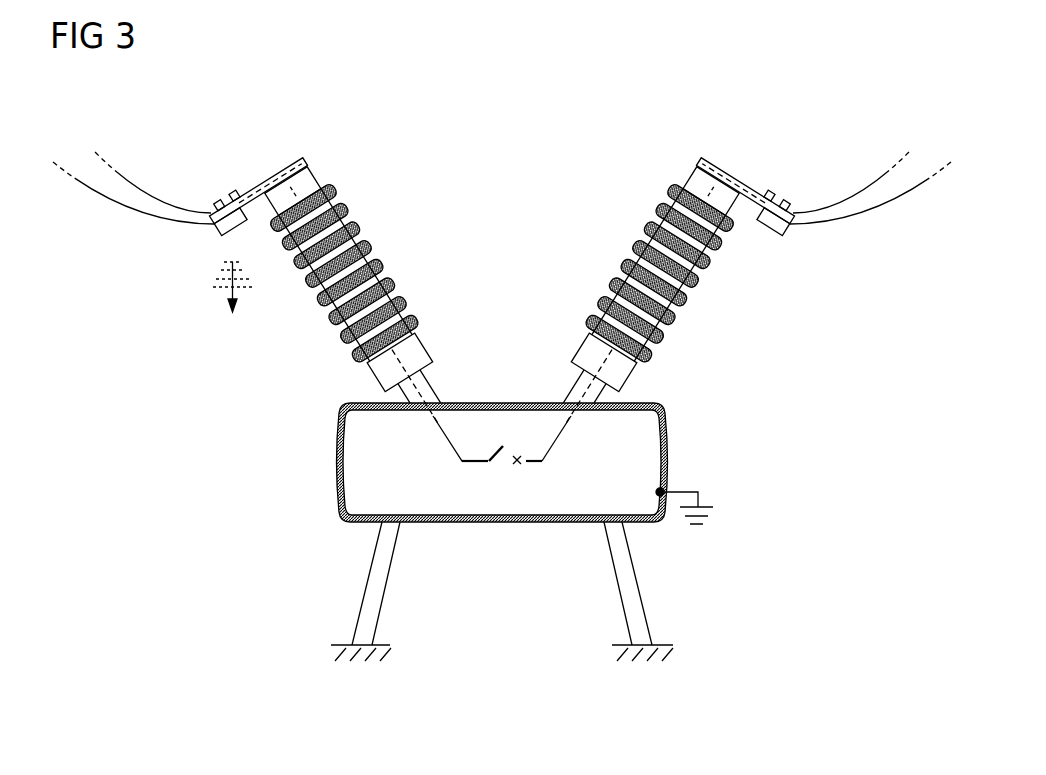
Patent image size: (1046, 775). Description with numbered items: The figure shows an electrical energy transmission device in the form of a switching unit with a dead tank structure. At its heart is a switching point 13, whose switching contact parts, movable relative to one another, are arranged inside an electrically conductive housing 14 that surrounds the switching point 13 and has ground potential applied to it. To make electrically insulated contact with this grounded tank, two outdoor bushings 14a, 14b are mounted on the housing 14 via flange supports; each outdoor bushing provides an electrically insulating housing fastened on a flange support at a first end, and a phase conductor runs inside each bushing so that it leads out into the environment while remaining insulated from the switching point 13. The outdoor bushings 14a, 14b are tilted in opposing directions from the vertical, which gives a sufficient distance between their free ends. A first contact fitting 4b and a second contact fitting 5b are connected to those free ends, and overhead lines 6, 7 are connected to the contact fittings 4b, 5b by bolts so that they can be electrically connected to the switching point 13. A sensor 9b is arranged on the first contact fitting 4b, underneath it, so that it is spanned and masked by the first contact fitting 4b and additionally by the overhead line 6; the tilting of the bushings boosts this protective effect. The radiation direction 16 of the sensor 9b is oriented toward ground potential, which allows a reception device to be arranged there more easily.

The first contact fitting 4b is at (338, 298).
The second contact fitting 5b is at (666, 298).
The overhead line 6 is at (147, 199).
The overhead line 7 is at (857, 199).
The sensor 9b is at (216, 236).
The switching point 13 is at (503, 523).
The electrically conductive housing 14 is at (668, 445).
The outdoor bushing 14a is at (387, 260).
The outdoor bushing 14b is at (617, 260).
The radiation direction 16 is at (224, 289).